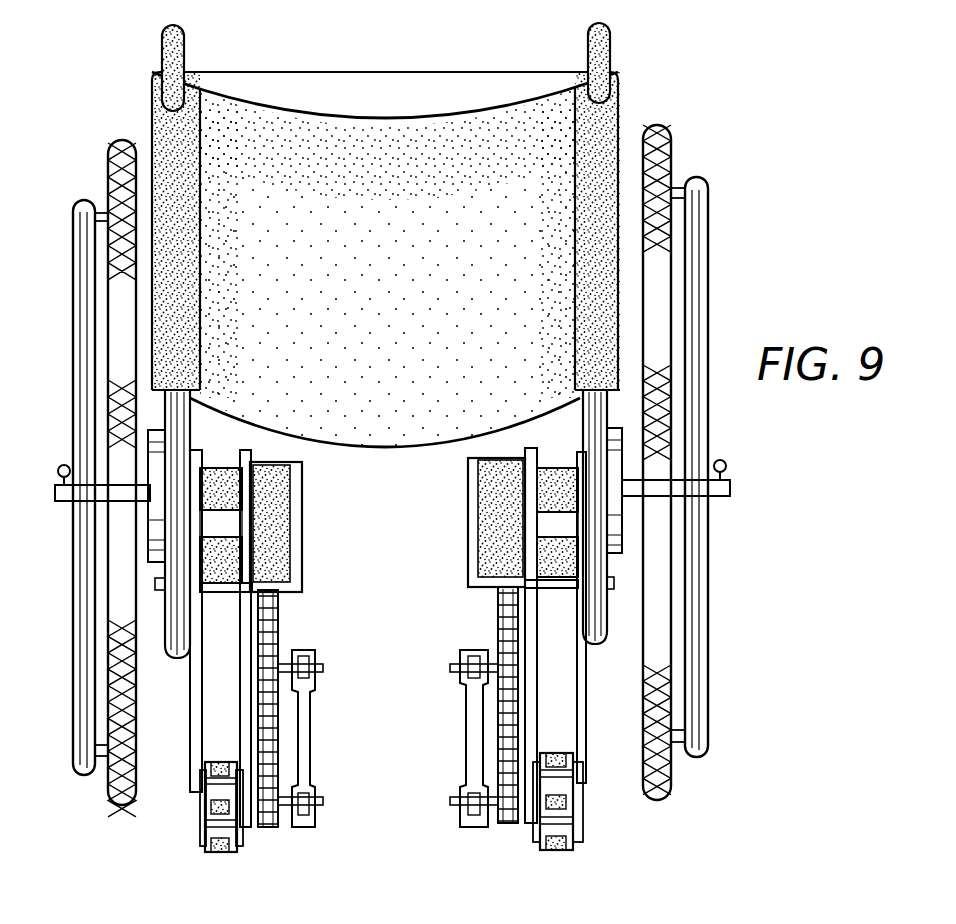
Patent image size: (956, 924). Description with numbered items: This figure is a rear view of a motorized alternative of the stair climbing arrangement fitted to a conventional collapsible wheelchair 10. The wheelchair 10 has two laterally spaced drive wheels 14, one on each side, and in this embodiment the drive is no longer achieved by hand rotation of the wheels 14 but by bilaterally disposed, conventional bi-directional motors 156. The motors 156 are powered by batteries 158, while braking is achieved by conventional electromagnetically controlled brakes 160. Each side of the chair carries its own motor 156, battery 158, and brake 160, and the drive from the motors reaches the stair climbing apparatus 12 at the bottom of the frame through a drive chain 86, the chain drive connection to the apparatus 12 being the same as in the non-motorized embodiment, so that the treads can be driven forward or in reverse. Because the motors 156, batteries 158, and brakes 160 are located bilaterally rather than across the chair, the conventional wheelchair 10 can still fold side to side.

The wheelchair 10 is at (362, 104).
The stair climbing apparatus 12 is at (196, 870).
The drive wheels 14 is at (113, 138).
The drive chain 86 is at (268, 641).
The bi-directional motors 156 is at (272, 528).
The batteries 158 is at (222, 578).
The brakes 160 is at (214, 471).